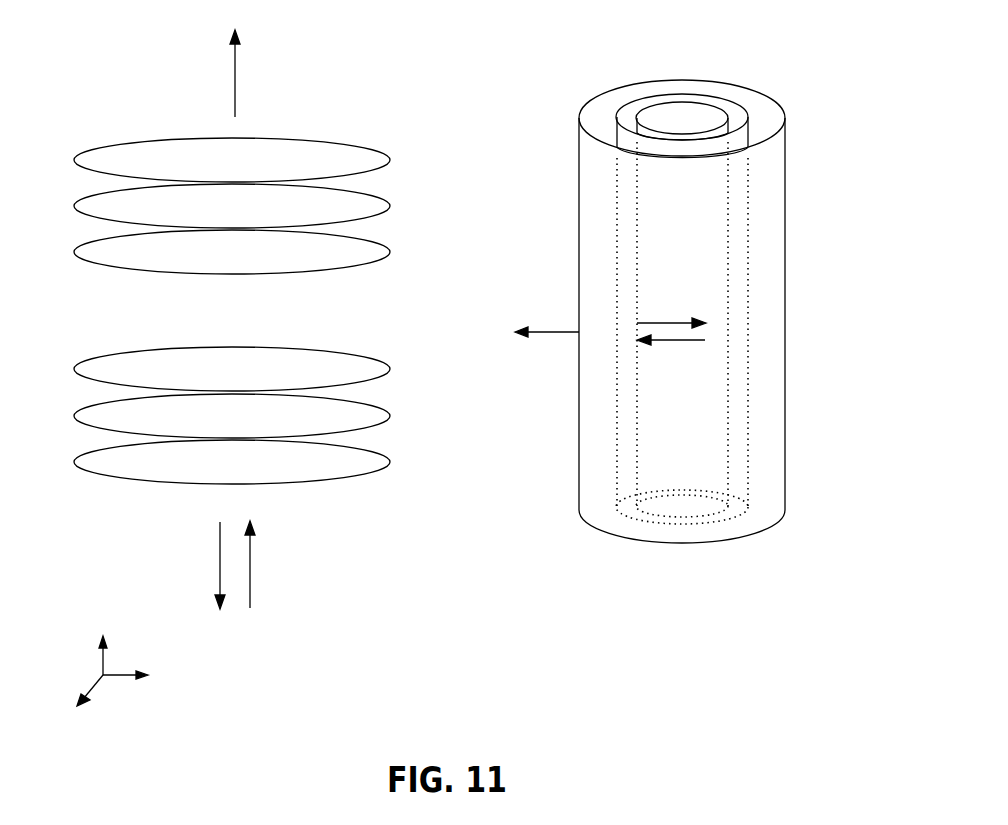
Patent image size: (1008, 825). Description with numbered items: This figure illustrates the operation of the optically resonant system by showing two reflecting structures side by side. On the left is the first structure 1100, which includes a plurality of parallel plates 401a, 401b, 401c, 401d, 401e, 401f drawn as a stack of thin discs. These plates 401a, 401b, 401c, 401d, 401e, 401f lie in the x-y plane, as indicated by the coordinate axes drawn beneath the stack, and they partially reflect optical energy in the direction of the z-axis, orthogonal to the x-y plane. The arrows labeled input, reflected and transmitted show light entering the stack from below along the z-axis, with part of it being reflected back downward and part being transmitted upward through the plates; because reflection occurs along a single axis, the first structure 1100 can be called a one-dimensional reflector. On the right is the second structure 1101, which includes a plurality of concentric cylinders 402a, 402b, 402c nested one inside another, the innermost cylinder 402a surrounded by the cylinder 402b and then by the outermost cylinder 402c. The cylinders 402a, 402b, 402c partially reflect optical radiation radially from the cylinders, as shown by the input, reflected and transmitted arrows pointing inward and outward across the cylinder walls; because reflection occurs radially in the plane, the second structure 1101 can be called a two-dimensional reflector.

The parallel plate 401a is at (390, 462).
The parallel plate 401b is at (390, 416).
The parallel plate 401c is at (390, 369).
The parallel plate 401d is at (390, 250).
The parallel plate 401e is at (390, 204).
The parallel plate 401f is at (390, 158).
The concentric cylinder 402a is at (695, 100).
The concentric cylinder 402b is at (723, 98).
The concentric cylinder 402c is at (760, 95).
The first structure 1100 is at (264, 372).
The second structure 1101 is at (639, 308).